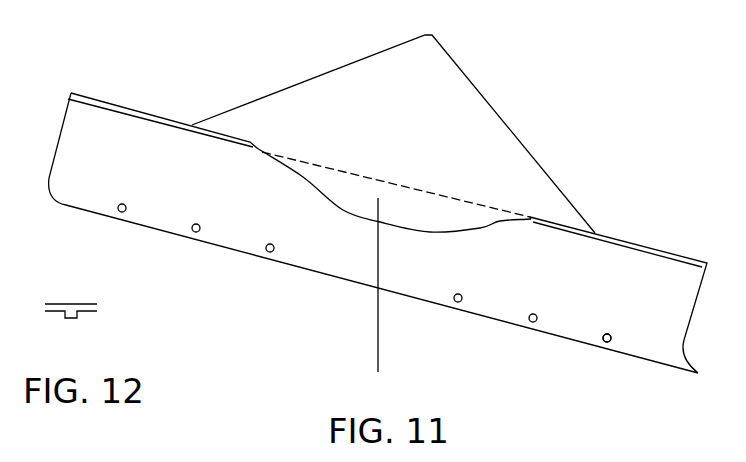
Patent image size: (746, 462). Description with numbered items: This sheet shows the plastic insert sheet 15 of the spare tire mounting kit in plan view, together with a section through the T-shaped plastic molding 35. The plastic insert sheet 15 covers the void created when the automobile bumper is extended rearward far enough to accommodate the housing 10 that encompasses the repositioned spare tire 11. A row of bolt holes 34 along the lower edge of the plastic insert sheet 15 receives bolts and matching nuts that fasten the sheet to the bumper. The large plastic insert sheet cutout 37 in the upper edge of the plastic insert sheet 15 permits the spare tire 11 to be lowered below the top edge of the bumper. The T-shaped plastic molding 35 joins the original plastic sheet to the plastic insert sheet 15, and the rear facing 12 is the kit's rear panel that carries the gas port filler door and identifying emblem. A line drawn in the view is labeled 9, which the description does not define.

In FIG. 11, the handle 9 is at (393, 126).
In FIG. 11, the plastic insert sheet 15 is at (210, 157).
In FIG. 11, the plastic insert sheet cutout 37 is at (340, 210).
In FIG. 11, the automobile spare tire 11 is at (378, 296).
In FIG. 11, the housing 10 is at (607, 342).
In FIG. 11, the bolt holes 34 is at (608, 342).
In FIG. 12, the rear facing 12 is at (71, 321).
In FIG. 12, the T-shaped plastic molding 35 is at (71, 335).